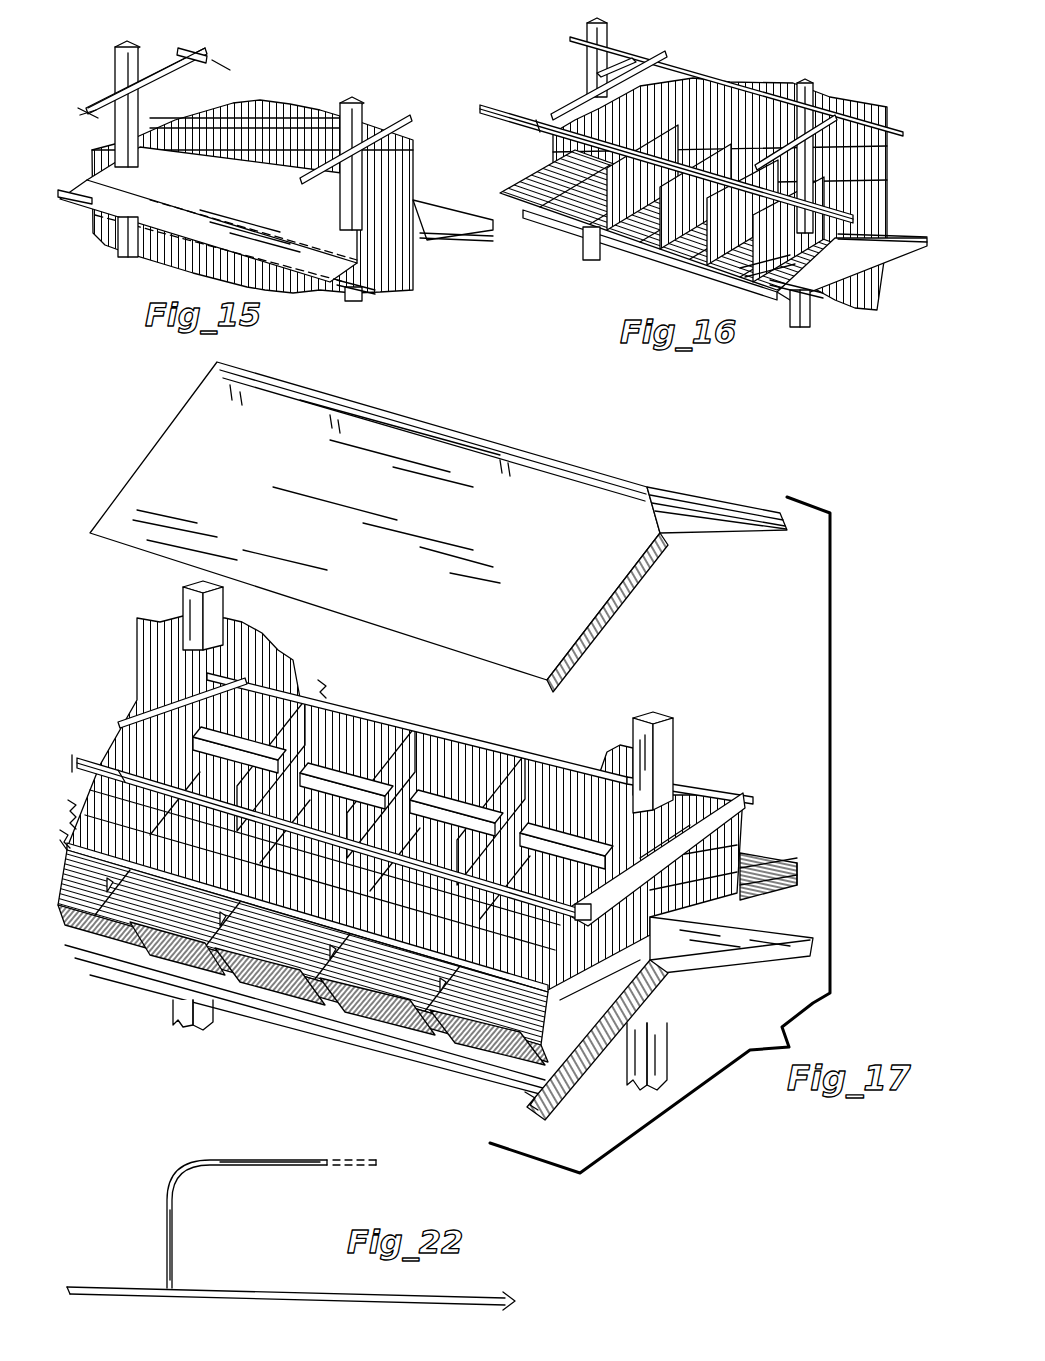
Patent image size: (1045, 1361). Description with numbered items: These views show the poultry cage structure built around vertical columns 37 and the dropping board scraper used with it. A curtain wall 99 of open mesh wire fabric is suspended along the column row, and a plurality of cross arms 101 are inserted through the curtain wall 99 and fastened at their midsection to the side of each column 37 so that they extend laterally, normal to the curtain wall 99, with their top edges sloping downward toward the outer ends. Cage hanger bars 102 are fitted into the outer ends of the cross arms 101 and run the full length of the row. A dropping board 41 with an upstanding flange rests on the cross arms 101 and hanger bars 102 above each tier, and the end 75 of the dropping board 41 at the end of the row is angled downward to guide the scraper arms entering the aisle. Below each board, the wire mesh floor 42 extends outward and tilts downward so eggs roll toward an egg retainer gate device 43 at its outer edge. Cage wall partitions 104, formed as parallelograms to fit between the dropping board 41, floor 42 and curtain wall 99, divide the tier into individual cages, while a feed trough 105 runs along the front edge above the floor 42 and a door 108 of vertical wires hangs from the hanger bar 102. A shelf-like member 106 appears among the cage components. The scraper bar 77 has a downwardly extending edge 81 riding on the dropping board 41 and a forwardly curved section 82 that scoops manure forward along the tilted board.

In FIG. 15, the column 37 is at (138, 98).
In FIG. 16, the column 37 is at (604, 26).
In FIG. 17, the column 37 is at (180, 596).
In FIG. 15, the dropping board 41 is at (203, 213).
In FIG. 16, the dropping board 41 is at (890, 210).
In FIG. 17, the dropping board 41 is at (688, 487).
In FIG. 22, the dropping board 41 is at (300, 1288).
In FIG. 16, the floor 42 is at (668, 256).
In FIG. 17, the floor 42 is at (760, 885).
In FIG. 17, the egg retainer gate device 43 is at (755, 846).
In FIG. 17, the end of the dropping board 75 is at (725, 528).
In FIG. 22, the scraper bar 77 is at (246, 1215).
In FIG. 22, the downwardly extending edge 81 is at (173, 1244).
In FIG. 22, the forwardly curved section 82 is at (290, 1171).
In FIG. 15, the curtain wall 99 is at (303, 104).
In FIG. 16, the curtain wall 99 is at (786, 80).
In FIG. 17, the curtain wall 99 is at (135, 645).
In FIG. 15, the cross arm 101 is at (212, 78).
In FIG. 16, the cross arm 101 is at (590, 76).
In FIG. 17, the cross arm 101 is at (140, 698).
In FIG. 15, the cage hanger bar 102 is at (198, 50).
In FIG. 16, the cage hanger bar 102 is at (692, 74).
In FIG. 17, the cage hanger bar 102 is at (100, 760).
In FIG. 16, the cage wall partition 104 is at (548, 144).
In FIG. 17, the cage wall partition 104 is at (335, 692).
In FIG. 17, the feed trough 105 is at (770, 861).
In FIG. 17, the shelf 106 is at (420, 735).
In FIG. 17, the door 108 is at (318, 680).